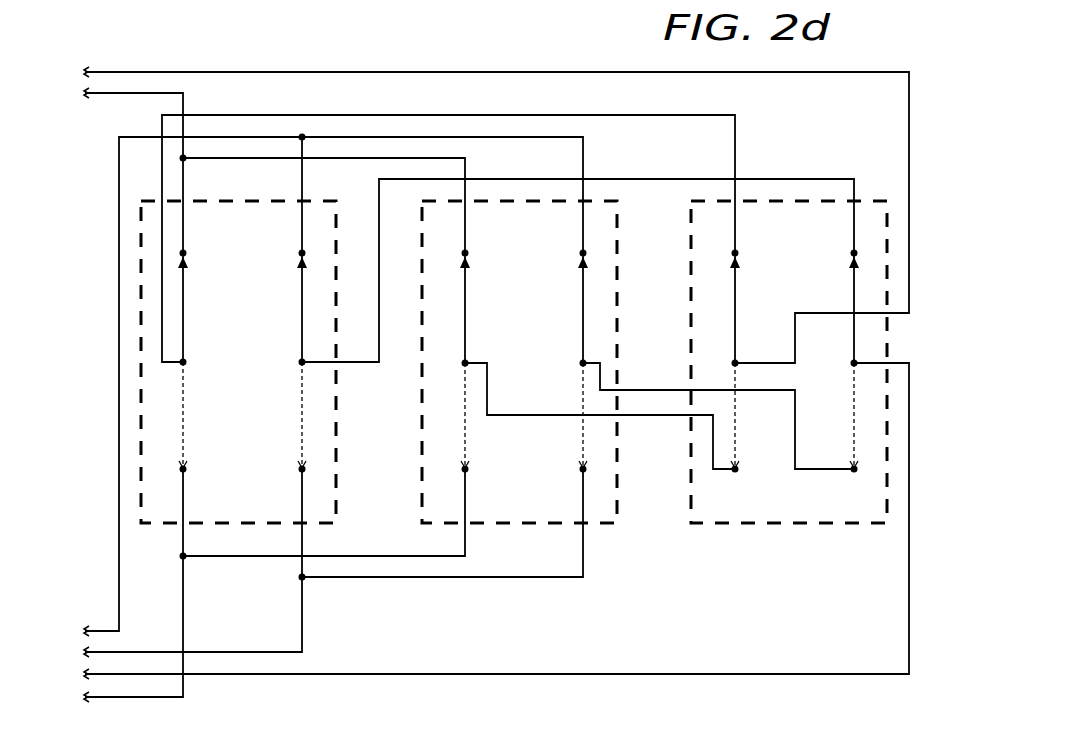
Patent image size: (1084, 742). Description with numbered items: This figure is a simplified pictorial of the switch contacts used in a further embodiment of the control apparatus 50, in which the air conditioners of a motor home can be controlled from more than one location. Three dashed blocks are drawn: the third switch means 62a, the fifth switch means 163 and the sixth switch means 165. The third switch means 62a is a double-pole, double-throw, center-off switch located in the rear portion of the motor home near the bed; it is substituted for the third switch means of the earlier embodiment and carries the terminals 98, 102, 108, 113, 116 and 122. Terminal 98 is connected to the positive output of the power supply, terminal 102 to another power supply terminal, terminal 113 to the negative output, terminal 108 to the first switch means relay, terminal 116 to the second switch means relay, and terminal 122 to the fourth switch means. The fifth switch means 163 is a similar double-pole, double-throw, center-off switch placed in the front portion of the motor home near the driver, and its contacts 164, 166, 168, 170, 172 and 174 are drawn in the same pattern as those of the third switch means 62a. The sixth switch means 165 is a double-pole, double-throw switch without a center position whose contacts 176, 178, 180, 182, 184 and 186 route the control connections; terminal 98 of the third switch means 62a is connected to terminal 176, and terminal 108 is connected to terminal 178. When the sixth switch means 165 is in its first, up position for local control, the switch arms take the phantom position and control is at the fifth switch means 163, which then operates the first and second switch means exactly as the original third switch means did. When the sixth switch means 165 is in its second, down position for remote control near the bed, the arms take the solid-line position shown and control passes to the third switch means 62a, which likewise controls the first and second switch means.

The control apparatus 50 is at (481, 54).
The third switch means 62a is at (337, 458).
The fifth switch means 163 is at (420, 432).
The sixth switch means 165 is at (690, 268).
The terminal 102 is at (185, 253).
The terminal 122 is at (298, 263).
The light emitting diode 164 is at (467, 253).
The light emitting diode 166 is at (580, 263).
The terminal 176 is at (737, 253).
The terminal 178 is at (851, 263).
The terminal 98 is at (188, 360).
The terminal 108 is at (298, 366).
The cathode node 168 is at (469, 360).
The cathode node 170 is at (579, 366).
The cathode node 180 is at (739, 360).
The cathode node 182 is at (850, 366).
The terminal 116 is at (188, 466).
The terminal 113 is at (298, 472).
The light path to sensor node 172 is at (470, 466).
The light path to sensor node 174 is at (580, 472).
The light path to sensor node 184 is at (740, 466).
The light path to sensor node 186 is at (850, 472).